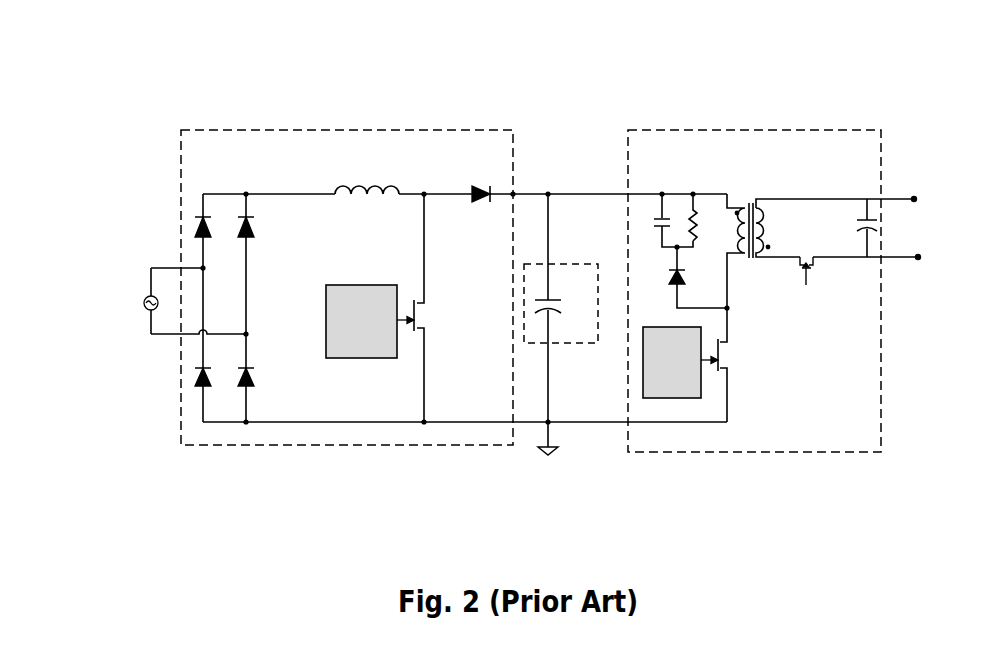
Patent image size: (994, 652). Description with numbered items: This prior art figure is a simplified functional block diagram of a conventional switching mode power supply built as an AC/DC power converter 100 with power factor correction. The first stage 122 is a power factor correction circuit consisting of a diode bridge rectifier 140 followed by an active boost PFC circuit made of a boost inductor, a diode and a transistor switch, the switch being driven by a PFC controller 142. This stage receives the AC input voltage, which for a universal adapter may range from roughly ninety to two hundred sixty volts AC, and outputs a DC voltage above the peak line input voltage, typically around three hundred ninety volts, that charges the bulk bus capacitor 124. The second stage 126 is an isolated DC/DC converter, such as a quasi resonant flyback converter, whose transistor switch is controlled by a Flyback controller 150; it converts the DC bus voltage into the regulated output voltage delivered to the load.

The AC/DC power converter 100 is at (489, 276).
The first stage 122 is at (373, 162).
The bus capacitor 124 is at (575, 348).
The second stage 126 is at (750, 153).
The diode bridge rectifier 140 is at (227, 417).
The PFC controller 142 is at (361, 321).
The Flyback controller 150 is at (672, 362).